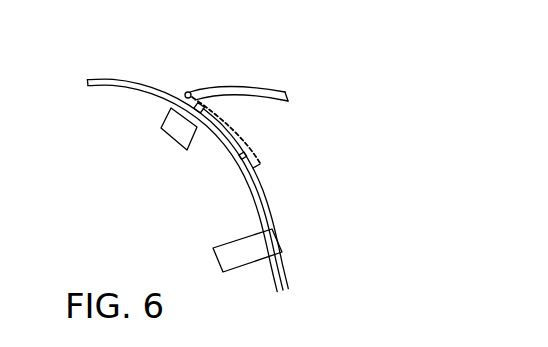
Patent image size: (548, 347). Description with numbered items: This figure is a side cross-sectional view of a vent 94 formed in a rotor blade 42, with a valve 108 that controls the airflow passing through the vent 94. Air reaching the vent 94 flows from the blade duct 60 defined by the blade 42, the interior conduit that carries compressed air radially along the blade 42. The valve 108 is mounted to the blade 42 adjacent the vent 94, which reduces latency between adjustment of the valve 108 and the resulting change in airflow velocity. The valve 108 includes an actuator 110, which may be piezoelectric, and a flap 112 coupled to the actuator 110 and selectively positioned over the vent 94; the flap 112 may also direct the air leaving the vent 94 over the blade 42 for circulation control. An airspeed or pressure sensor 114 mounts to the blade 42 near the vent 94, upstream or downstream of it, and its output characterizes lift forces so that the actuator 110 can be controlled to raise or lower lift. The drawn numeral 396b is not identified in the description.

The rotor blade 42 is at (125, 85).
The interior conduit 60 is at (162, 191).
The vent 94 is at (210, 133).
The valve 108 is at (315, 84).
The actuator 110 is at (170, 126).
The flap 112 is at (243, 92).
The airspeed or pressure sensor 114 is at (273, 247).
The hinge pin 396b is at (188, 92).